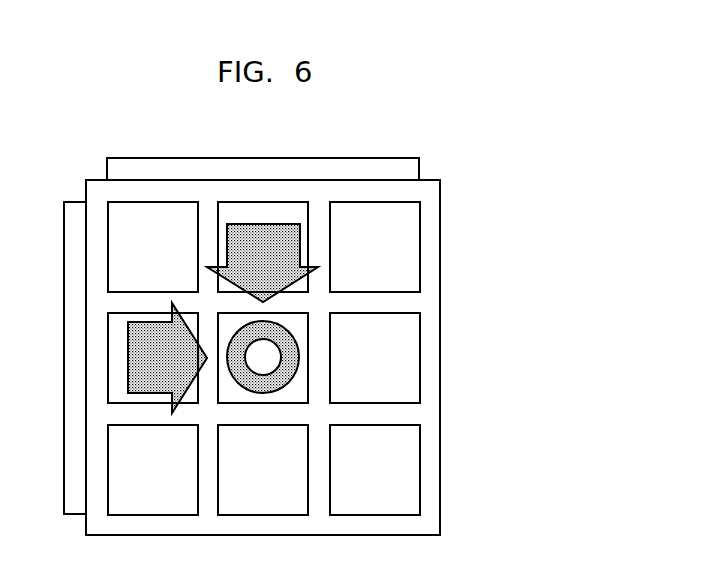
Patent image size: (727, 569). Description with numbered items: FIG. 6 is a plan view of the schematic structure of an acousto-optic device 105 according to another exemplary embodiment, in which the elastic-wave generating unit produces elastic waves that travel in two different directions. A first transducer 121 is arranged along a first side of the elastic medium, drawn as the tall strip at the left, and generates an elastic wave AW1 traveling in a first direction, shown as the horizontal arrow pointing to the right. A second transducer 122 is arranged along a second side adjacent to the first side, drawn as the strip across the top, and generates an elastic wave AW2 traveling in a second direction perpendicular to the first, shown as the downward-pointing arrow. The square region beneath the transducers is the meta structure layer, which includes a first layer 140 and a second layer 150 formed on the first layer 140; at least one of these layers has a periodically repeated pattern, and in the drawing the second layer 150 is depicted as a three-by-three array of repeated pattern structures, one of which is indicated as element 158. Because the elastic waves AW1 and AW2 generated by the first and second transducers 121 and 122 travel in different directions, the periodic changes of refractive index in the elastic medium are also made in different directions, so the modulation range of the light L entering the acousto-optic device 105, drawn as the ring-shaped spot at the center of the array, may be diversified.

The acousto-optic device 105 is at (303, 315).
The first transducer 121 is at (73, 262).
The second transducer 122 is at (412, 170).
The first layer 140 is at (435, 497).
The second layer 150 is at (422, 227).
The pixel region 158 is at (400, 260).
The elastic wave AW1 is at (167, 358).
The elastic wave AW2 is at (262, 263).
The light L is at (260, 393).